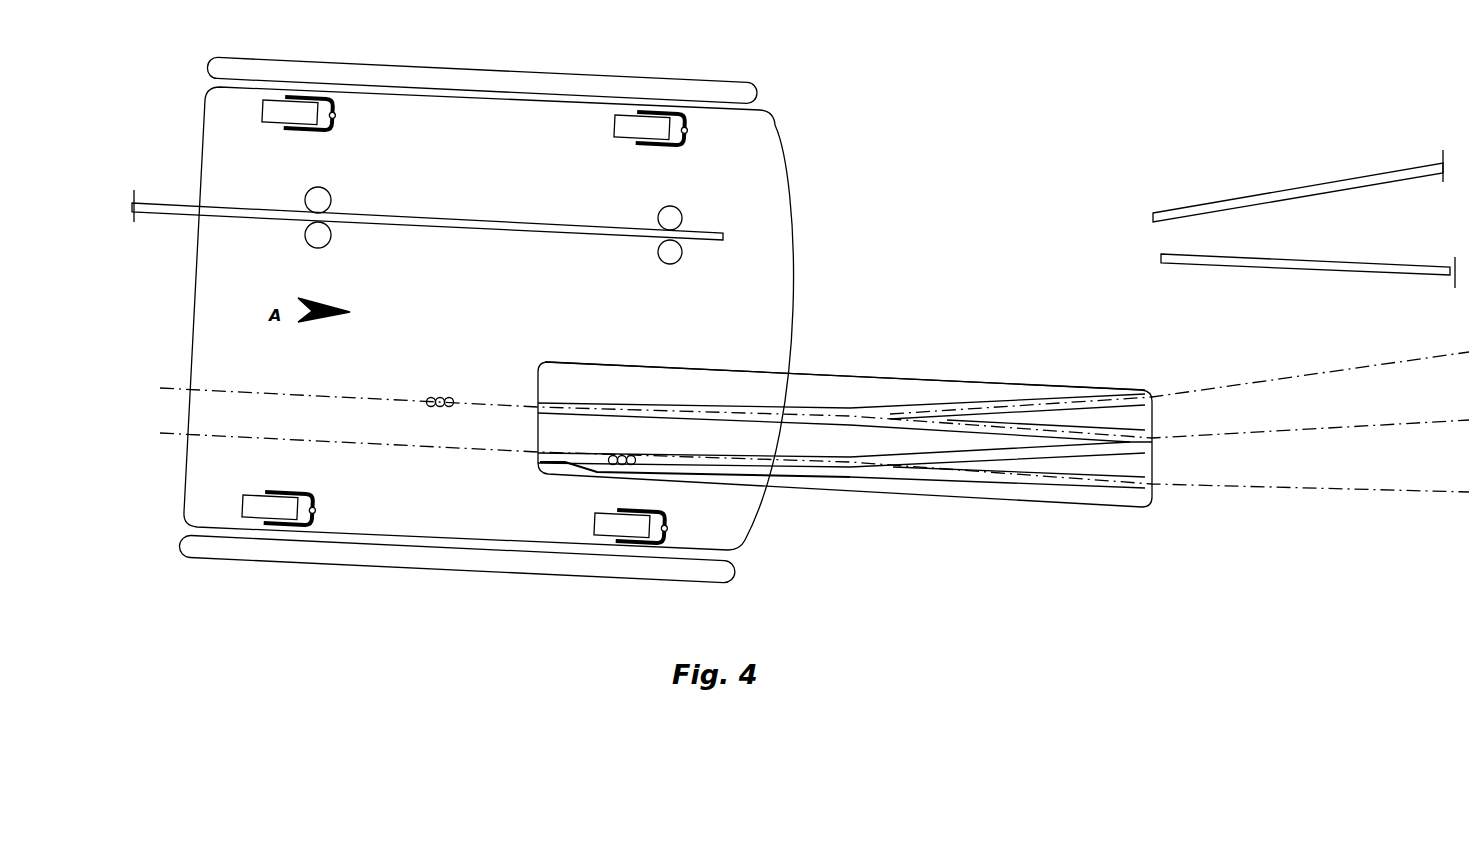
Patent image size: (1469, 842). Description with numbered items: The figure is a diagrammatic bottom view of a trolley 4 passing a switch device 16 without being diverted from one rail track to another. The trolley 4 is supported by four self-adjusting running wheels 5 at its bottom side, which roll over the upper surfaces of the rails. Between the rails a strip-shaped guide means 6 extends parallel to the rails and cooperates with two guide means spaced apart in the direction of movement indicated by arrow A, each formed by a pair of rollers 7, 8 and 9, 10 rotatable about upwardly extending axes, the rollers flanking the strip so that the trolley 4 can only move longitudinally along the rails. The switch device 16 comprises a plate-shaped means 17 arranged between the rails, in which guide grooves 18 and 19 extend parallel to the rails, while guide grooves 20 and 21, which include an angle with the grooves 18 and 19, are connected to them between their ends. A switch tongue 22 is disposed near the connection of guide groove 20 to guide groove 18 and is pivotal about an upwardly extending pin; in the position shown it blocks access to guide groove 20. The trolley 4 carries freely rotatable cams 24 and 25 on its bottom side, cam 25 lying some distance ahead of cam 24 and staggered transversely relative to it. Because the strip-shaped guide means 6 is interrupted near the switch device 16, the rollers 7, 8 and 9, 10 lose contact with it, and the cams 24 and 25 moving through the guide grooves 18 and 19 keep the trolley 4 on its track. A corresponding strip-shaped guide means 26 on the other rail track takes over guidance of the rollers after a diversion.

The trolley 4 is at (760, 203).
The running wheel 5 is at (645, 125).
The guide means 6 is at (1228, 262).
The roller 7 is at (322, 196).
The roller 8 is at (325, 238).
The roller 9 is at (660, 212).
The roller 10 is at (664, 258).
The switch device 16 is at (828, 412).
The plate-shaped means 17 is at (925, 392).
The guide groove 18 is at (553, 460).
The guide groove 19 is at (657, 405).
The guide groove 20 is at (1028, 458).
The guide groove 21 is at (1022, 405).
The switch tongue 22 is at (800, 465).
The cam 24 is at (440, 398).
The cam 25 is at (602, 465).
The strip-shaped guide means 26 is at (1222, 206).